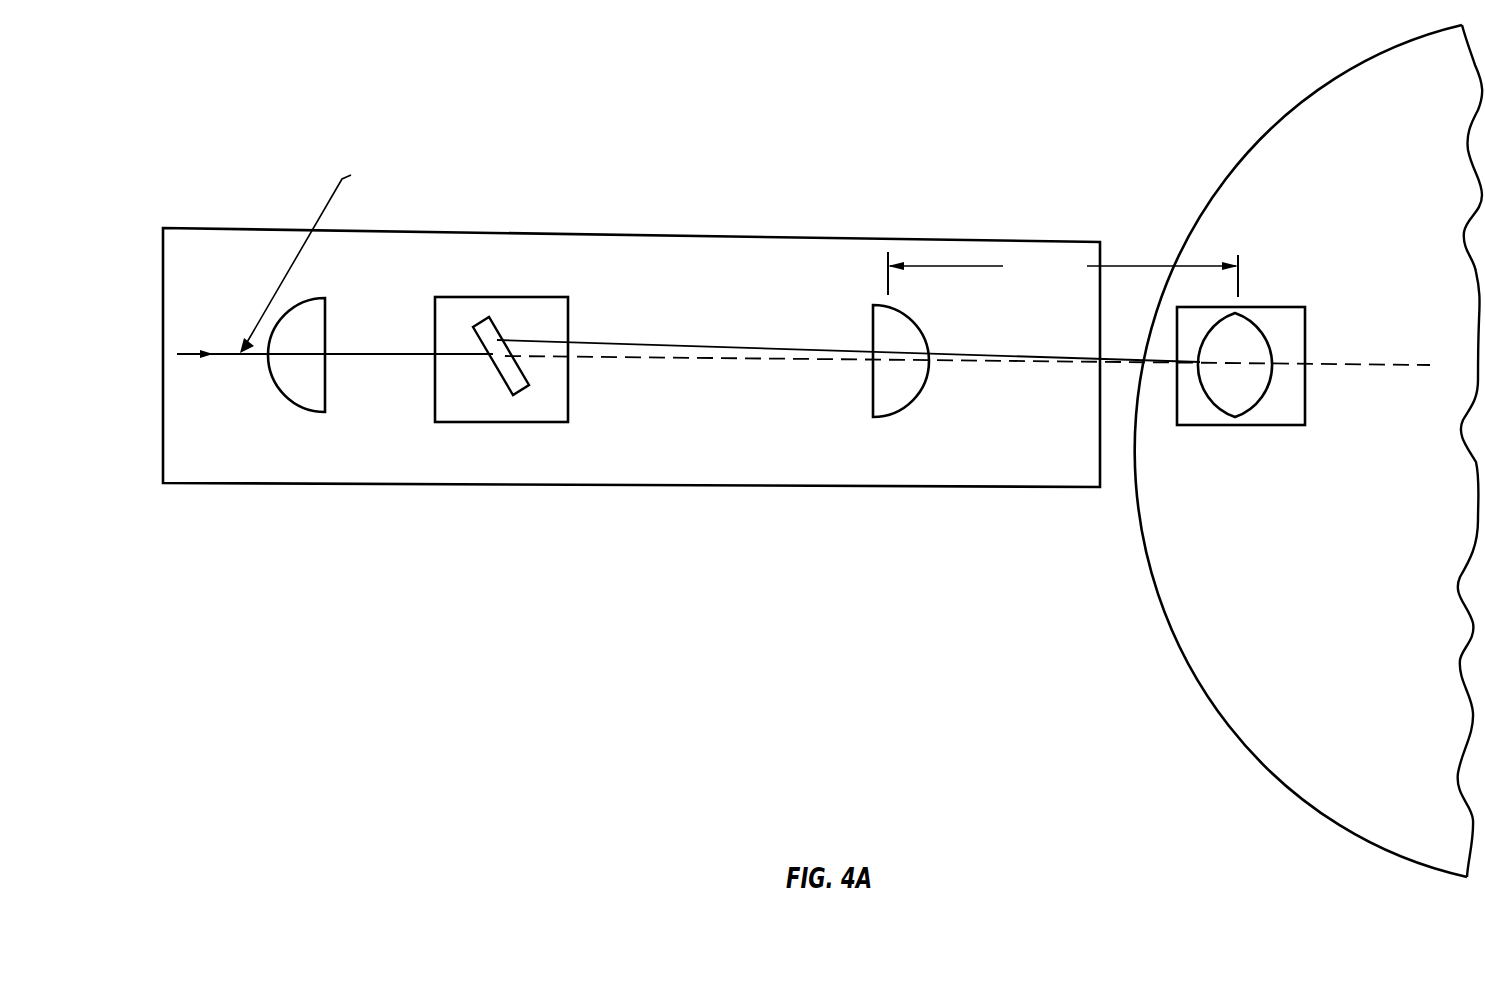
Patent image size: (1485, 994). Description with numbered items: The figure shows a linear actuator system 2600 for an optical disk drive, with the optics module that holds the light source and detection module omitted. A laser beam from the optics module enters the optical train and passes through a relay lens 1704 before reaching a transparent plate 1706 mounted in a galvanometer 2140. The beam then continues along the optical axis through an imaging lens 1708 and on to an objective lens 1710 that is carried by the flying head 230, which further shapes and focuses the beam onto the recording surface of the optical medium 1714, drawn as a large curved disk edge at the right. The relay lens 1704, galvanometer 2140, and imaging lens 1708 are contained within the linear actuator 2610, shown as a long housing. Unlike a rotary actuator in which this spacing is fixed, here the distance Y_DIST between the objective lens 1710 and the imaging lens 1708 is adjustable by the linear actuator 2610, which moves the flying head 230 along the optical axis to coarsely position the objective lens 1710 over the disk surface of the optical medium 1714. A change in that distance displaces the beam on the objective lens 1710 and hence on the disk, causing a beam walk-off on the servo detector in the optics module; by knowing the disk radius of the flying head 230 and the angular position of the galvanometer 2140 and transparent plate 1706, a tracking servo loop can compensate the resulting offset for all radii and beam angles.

The linear actuator system 2600 is at (822, 451).
The linear actuator 2610 is at (1028, 487).
The relay lens 1704 is at (303, 408).
The galvanometer 2140 is at (480, 423).
The transparent plate 1706 is at (514, 397).
The imaging lens 1708 is at (902, 412).
The optical medium 1714 is at (1217, 188).
The flying head 230 is at (1203, 425).
The objective lens 1710 is at (1255, 330).